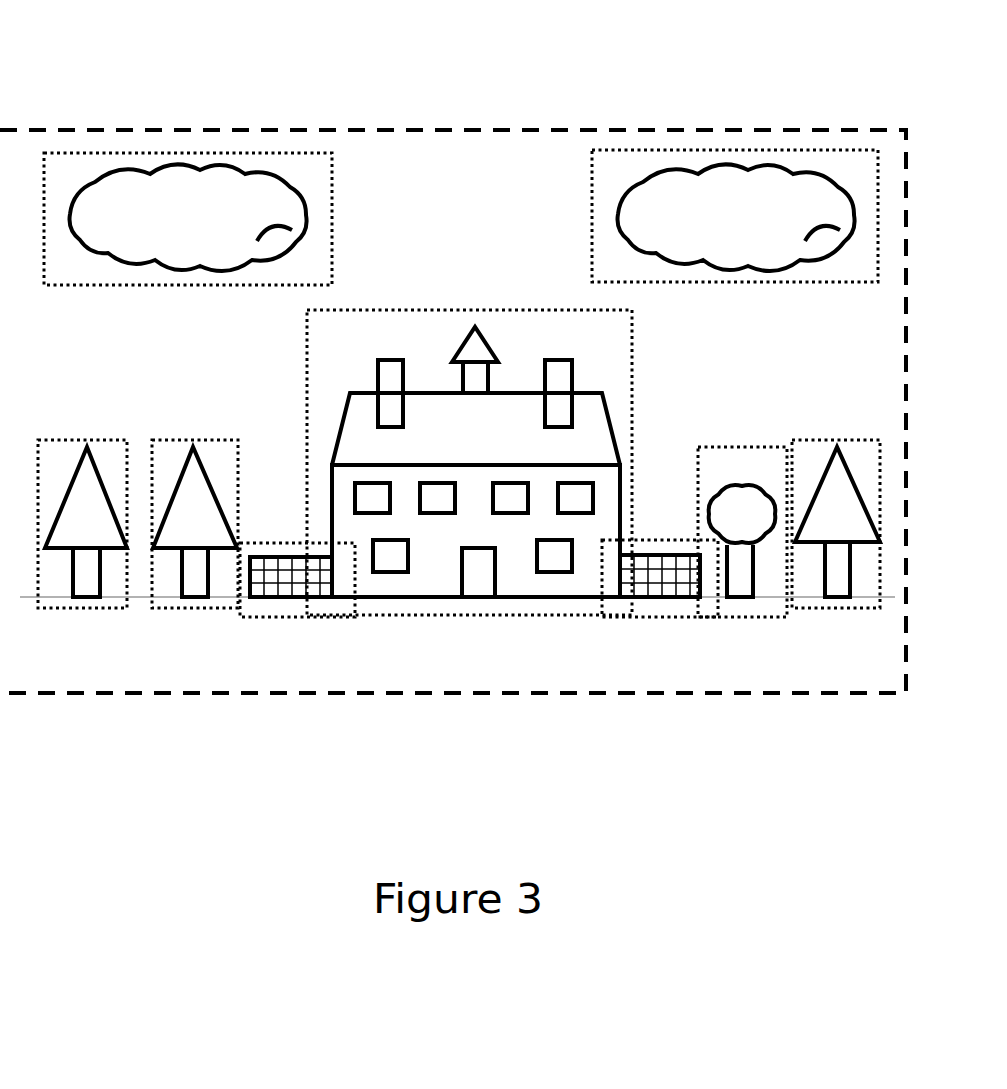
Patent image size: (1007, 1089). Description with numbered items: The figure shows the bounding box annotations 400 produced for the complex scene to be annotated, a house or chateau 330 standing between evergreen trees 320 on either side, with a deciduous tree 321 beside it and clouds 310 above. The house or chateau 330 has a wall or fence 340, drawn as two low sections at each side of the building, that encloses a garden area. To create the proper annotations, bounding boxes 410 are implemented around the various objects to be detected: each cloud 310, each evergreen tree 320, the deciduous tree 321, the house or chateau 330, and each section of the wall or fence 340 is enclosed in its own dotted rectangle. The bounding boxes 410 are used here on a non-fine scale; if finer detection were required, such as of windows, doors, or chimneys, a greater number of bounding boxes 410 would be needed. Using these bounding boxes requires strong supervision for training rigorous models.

The image 400 is at (118, 46).
The bounding boxes 410 is at (461, 159).
The clouds 310 is at (200, 228).
The house or chateau 330 is at (437, 412).
The evergreen trees 320 is at (837, 447).
The wall or fence 340 is at (292, 553).
The deciduous tree 321 is at (742, 487).